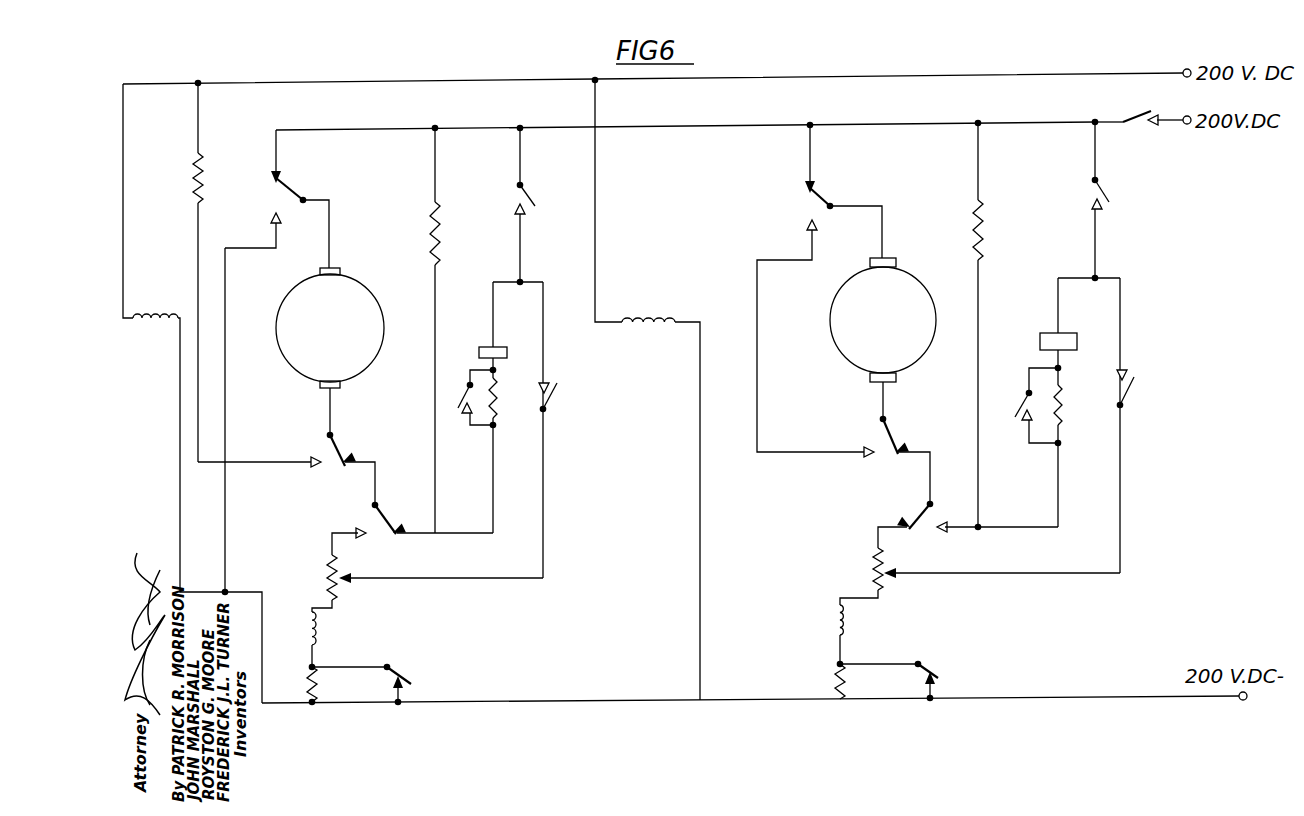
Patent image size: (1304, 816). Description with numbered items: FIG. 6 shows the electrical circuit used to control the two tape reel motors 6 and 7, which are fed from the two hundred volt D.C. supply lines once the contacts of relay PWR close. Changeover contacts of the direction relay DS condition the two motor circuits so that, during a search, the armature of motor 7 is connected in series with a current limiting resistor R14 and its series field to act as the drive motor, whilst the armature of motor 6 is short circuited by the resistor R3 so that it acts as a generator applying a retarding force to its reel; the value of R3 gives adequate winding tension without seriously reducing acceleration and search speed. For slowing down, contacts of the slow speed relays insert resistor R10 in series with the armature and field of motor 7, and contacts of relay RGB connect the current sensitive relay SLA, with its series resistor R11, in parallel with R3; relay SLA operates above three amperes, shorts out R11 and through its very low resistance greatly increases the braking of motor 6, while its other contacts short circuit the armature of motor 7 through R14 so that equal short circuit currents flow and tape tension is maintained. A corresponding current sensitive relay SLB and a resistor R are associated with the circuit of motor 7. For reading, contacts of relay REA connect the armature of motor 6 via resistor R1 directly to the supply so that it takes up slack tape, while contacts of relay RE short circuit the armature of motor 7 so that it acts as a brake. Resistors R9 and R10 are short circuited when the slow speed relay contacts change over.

The resistor R1 is at (213, 271).
The electric motor 6 is at (330, 351).
The resistor R9 is at (294, 685).
The resistor R3 is at (450, 329).
The current sensitive relay SLA is at (477, 343).
The series resistor R11 is at (513, 403).
The electric motor 7 is at (883, 338).
The current limiting resistor R14 is at (975, 569).
The resistor R10 is at (820, 680).
The resistor R is at (986, 323).
The current sensitive relay SLB is at (1042, 332).